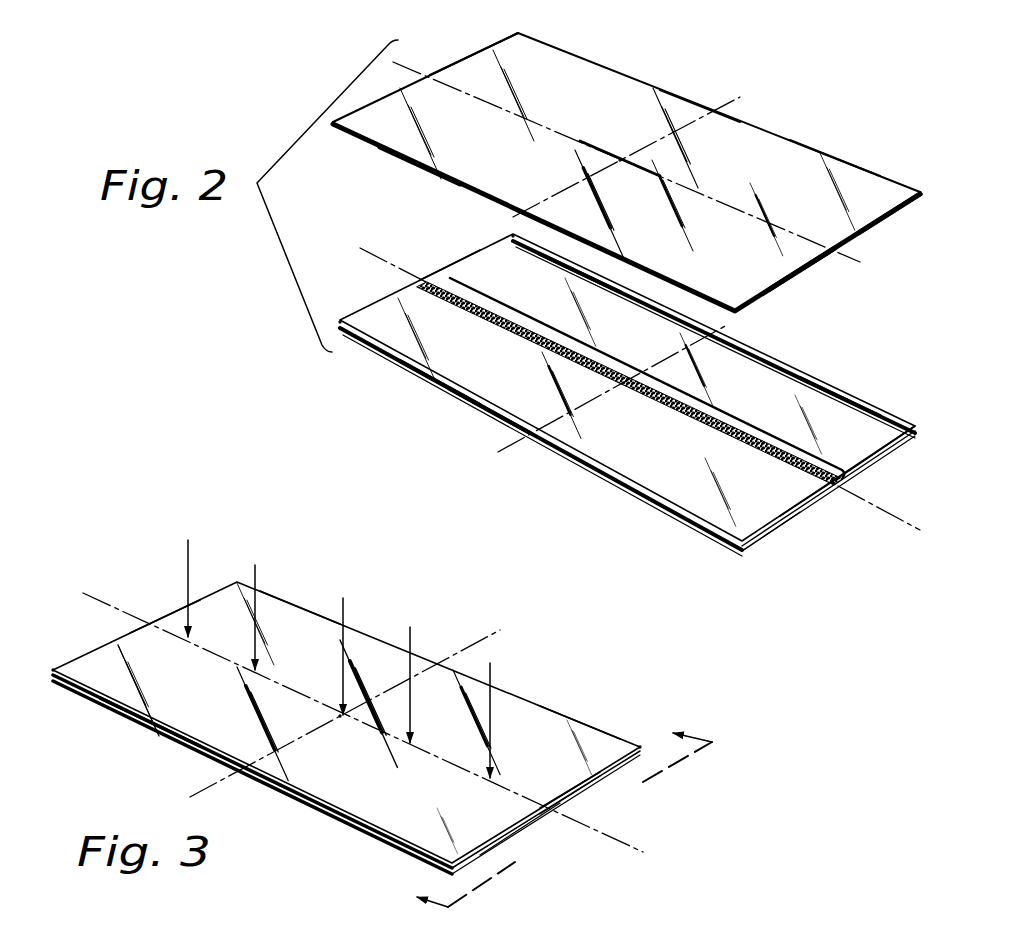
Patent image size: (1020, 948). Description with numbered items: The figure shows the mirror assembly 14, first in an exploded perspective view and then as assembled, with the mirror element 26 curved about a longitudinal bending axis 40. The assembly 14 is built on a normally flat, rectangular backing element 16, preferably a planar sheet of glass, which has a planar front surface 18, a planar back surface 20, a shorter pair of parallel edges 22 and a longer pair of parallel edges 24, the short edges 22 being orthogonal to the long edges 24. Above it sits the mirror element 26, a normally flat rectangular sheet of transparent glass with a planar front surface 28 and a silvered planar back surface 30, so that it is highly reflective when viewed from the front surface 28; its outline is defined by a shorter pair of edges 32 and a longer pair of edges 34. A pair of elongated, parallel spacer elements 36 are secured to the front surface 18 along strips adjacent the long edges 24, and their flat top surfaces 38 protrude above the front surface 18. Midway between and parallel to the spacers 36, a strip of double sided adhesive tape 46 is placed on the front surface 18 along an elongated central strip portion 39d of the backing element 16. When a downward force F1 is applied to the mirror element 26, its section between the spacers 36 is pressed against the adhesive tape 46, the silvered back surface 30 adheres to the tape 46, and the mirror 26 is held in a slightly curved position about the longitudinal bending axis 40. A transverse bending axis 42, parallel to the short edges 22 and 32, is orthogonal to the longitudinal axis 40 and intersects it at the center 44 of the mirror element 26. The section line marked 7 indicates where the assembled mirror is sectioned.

In FIG. 2, the mirror assembly 14 is at (648, 62).
In FIG. 3, the mirror assembly 14 is at (225, 538).
In FIG. 2, the backing element 16 is at (775, 533).
In FIG. 3, the backing element 16 is at (518, 838).
In FIG. 2, the front surface 18 is at (705, 470).
In FIG. 2, the back surface 20 is at (887, 450).
In FIG. 2, the edges 22 is at (450, 268).
In FIG. 3, the edges 22 is at (575, 800).
In FIG. 2, the edges 24 is at (837, 392).
In FIG. 3, the edges 24 is at (153, 735).
In FIG. 2, the mirror element 26 is at (688, 97).
In FIG. 3, the mirror element 26 is at (577, 727).
In FIG. 2, the front surface 28 is at (515, 165).
In FIG. 3, the front surface 28 is at (427, 813).
In FIG. 2, the back surface 30 is at (803, 272).
In FIG. 2, the edges 32 is at (463, 60).
In FIG. 3, the edges 32 is at (163, 620).
In FIG. 2, the edges 34 is at (840, 160).
In FIG. 3, the edges 34 is at (300, 605).
In FIG. 2, the spacer elements 36 is at (513, 236).
In FIG. 3, the spacer elements 36 is at (53, 670).
In FIG. 2, the top surfaces 38 is at (573, 273).
In FIG. 2, the central strip portion 39d is at (657, 373).
In FIG. 2, the longitudinal bending axis 40 is at (902, 523).
In FIG. 3, the longitudinal bending axis 40 is at (643, 848).
In FIG. 2, the transverse bending axis 42 is at (745, 97).
In FIG. 3, the transverse bending axis 42 is at (493, 635).
In FIG. 2, the center 44 is at (620, 160).
In FIG. 3, the center 44 is at (343, 717).
In FIG. 2, the adhesive tape 46 is at (537, 342).
In FIG. 3, the downward force F1 is at (188, 563).
In FIG. 3, the section line 7- 7 is at (577, 830).